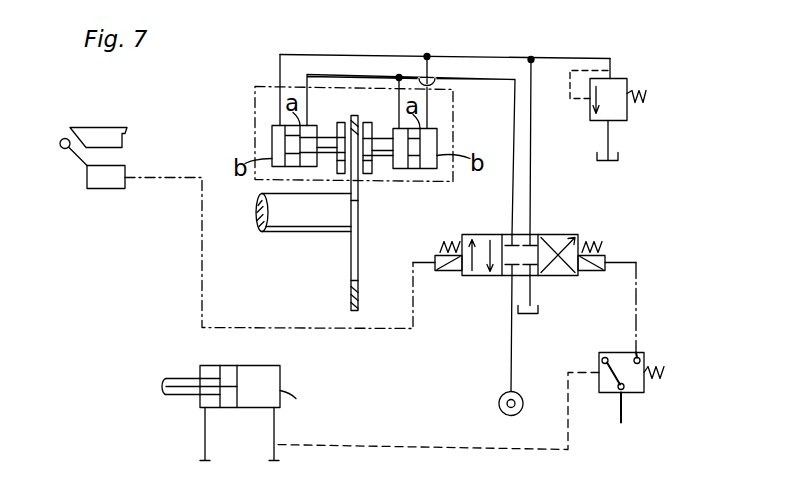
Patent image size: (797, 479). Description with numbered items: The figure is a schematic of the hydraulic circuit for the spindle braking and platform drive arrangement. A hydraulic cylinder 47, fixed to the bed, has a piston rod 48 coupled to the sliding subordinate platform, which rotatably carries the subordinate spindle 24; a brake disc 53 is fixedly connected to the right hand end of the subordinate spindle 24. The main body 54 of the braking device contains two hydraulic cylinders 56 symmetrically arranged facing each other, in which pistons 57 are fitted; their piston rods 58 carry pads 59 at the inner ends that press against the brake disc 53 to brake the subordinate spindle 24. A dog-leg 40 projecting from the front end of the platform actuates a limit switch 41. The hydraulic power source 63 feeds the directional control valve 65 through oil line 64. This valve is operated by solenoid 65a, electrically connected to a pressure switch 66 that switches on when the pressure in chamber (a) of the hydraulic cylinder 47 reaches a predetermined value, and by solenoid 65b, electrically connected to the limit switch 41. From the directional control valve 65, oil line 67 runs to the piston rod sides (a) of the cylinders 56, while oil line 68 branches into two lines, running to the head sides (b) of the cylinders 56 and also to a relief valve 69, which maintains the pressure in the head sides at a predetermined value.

The subordinate spindle 24 is at (283, 215).
The dog-leg 40 is at (97, 131).
The limit switch 41 is at (100, 188).
The hydraulic cylinder 47 is at (258, 372).
The piston rod 48 is at (172, 378).
The brake disc 53 is at (356, 272).
The main body of the braking device 54 is at (343, 86).
The hydraulic cylinders 56 is at (272, 140).
The pistons 57 is at (276, 130).
The piston rods 58 is at (322, 141).
The pads 59 is at (340, 163).
The hydraulic power source 63 is at (499, 403).
The oil line 64 is at (512, 355).
The directional control valve 65 is at (535, 234).
The solenoid 65a is at (605, 258).
The solenoid 65b is at (441, 270).
The pressure switch 66 is at (644, 352).
The oil line 67 is at (512, 183).
The oil line 68 is at (531, 128).
The relief valve 69 is at (627, 80).